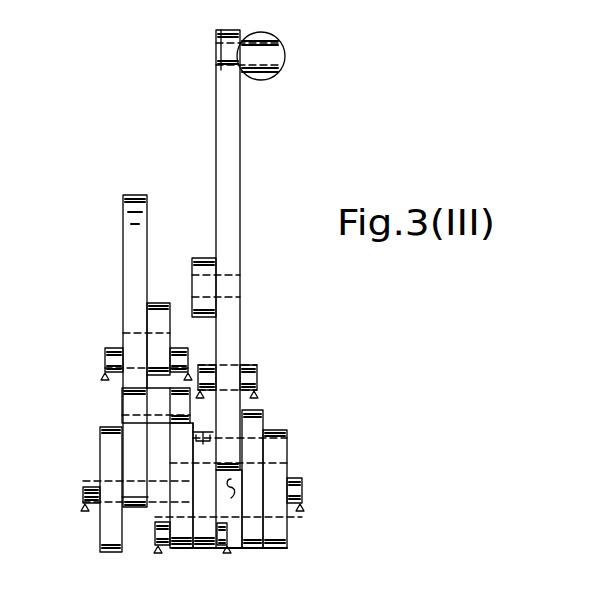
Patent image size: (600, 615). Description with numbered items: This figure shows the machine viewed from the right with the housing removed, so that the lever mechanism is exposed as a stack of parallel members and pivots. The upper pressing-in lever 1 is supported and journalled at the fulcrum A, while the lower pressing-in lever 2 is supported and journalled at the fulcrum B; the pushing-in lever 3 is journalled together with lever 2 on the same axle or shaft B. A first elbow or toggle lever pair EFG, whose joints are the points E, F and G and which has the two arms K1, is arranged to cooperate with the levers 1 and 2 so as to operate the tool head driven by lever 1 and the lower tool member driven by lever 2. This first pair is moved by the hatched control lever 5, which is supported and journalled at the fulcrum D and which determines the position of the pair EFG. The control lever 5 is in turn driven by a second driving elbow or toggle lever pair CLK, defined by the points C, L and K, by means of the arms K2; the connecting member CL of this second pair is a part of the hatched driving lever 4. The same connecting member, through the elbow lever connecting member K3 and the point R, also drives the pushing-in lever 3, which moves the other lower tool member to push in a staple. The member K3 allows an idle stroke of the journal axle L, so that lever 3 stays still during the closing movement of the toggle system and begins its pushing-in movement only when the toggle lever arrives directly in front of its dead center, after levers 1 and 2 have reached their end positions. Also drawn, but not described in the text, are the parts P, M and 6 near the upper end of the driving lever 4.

The upper pressing-in lever 1 is at (140, 269).
The lower pressing-in lever 2 is at (114, 478).
The pushing-in lever 3 is at (281, 483).
The driving lever 4 is at (234, 194).
The control lever 5 is at (188, 483).
The flywheel 6 is at (279, 58).
The pulley P is at (226, 52).
The motor M is at (234, 280).
The elbow lever pair joint E is at (131, 326).
The fulcrum A is at (113, 358).
The fulcrum B is at (93, 490).
The elbow lever connecting member point C is at (249, 376).
The fulcrum D is at (148, 478).
The elbow lever pair joint F is at (129, 405).
The elbow lever pair joint G is at (118, 500).
The journal axle L is at (203, 421).
The elbow lever point R is at (287, 530).
The elbow lever point K is at (224, 549).
The arms of first toggle lever pair K1 is at (132, 463).
The arms of second toggle lever pair K2 is at (243, 562).
The elbow lever connecting member K3 is at (258, 428).